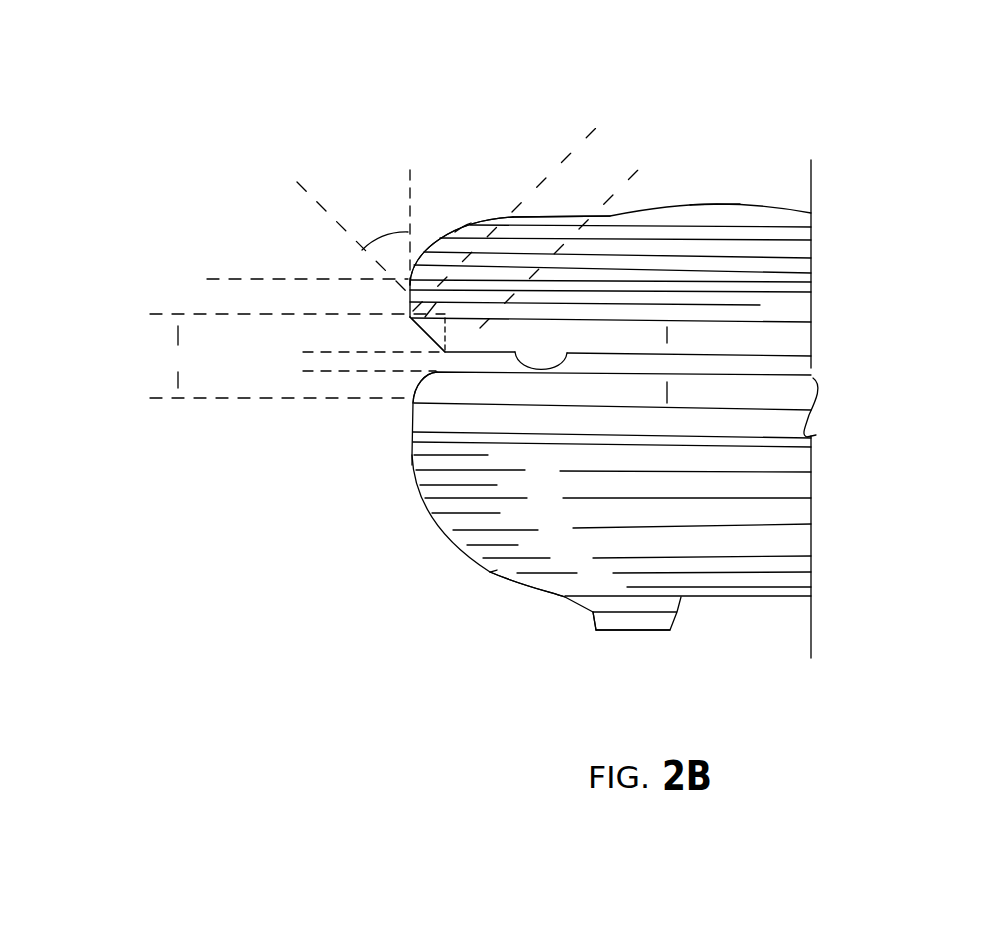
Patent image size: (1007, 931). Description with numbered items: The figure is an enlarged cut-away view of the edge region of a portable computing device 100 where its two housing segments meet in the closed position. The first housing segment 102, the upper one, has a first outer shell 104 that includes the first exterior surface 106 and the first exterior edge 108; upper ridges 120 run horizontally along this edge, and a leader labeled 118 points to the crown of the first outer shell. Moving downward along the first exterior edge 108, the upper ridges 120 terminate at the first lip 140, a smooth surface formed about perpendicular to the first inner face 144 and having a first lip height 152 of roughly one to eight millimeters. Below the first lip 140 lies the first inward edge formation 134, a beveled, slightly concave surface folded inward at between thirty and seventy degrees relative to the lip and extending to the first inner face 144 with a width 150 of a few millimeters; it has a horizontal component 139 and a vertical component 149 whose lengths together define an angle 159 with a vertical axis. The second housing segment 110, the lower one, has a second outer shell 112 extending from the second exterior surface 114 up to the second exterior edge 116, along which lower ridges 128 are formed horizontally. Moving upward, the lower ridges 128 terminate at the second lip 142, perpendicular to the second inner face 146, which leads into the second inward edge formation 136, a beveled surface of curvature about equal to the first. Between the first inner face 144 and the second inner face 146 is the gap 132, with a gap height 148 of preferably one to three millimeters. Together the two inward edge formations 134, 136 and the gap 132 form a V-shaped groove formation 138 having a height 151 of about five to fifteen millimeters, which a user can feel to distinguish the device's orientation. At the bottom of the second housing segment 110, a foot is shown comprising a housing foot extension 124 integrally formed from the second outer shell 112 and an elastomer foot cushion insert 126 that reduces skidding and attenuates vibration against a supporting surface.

The computing device 100 is at (221, 108).
The first housing segment 102 is at (417, 126).
The first outer shell 104 is at (510, 213).
The first exterior surface 106 is at (471, 226).
The first exterior edge 108 is at (423, 257).
The second housing segment 110 is at (467, 665).
The second outer shell 112 is at (590, 640).
The second exterior surface 114 is at (497, 570).
The second exterior edge 116 is at (427, 512).
The top crown 118 is at (733, 206).
The upper ridges 120 is at (767, 272).
The housing foot extension 124 is at (686, 612).
The foot cushion insert 126 is at (676, 622).
The lower ridges 128 is at (760, 470).
The gap 132 is at (667, 353).
The first inward edge formation 134 is at (424, 338).
The second inward edge formation 136 is at (415, 385).
The groove formation 138 is at (148, 312).
The horizontal component 139 is at (446, 297).
The first lip 140 is at (408, 296).
The second lip 142 is at (412, 413).
The first inner face 144 is at (786, 357).
The second inner face 146 is at (800, 376).
The gap height 148 is at (344, 327).
The vertical component 149 is at (446, 332).
The width 150 is at (608, 192).
The height 151 is at (178, 316).
The first lip height 152 is at (255, 232).
The angle 159 is at (380, 214).